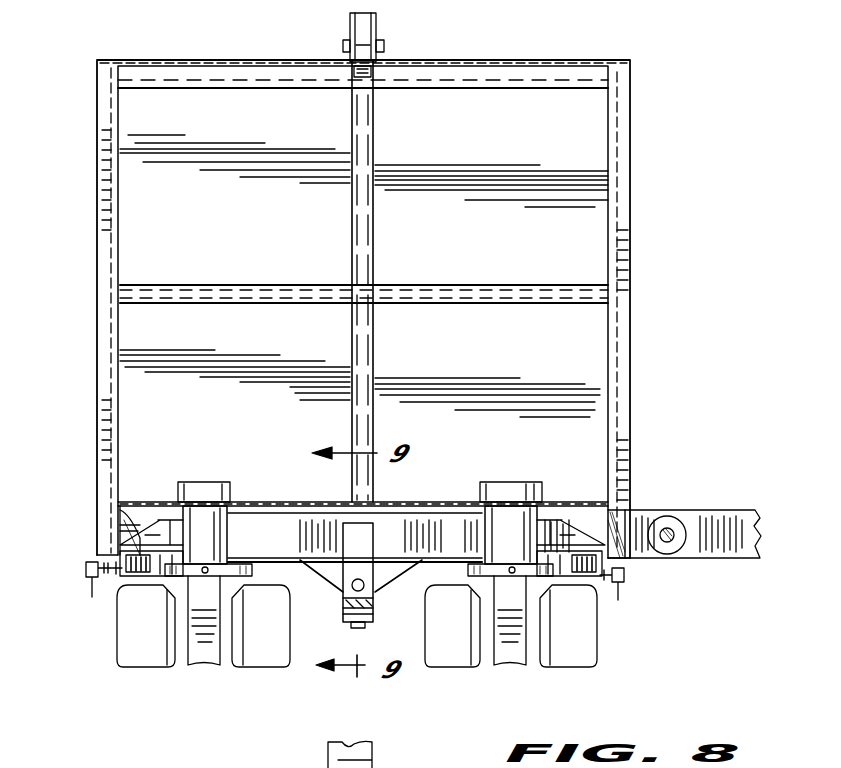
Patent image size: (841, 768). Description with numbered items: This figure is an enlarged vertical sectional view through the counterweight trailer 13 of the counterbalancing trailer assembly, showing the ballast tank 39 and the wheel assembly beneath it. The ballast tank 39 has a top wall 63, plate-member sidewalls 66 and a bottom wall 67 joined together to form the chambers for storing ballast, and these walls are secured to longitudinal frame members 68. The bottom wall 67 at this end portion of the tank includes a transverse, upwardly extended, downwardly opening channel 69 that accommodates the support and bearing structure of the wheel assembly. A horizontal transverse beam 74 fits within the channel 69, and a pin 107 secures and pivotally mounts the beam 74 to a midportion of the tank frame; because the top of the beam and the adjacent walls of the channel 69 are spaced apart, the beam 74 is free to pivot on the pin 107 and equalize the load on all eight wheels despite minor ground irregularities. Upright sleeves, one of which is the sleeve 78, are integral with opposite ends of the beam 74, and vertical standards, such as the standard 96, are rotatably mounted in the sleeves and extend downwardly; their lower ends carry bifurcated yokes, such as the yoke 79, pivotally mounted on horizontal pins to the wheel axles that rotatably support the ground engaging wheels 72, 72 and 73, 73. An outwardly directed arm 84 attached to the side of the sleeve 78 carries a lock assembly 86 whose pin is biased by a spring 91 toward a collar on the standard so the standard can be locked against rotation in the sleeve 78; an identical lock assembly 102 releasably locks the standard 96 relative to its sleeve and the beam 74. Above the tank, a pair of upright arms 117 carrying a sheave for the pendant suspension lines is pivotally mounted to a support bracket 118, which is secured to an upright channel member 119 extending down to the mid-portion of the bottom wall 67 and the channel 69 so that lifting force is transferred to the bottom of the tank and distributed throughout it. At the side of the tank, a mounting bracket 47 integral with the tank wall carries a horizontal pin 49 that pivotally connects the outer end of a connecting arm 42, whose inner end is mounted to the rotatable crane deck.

The counterweight trailer 13 is at (97, 470).
The ballast tank 39 is at (145, 120).
The connecting arm 42 is at (740, 516).
The mounting bracket 47 is at (668, 516).
The horizontal pin 49 is at (668, 542).
The top wall 63 is at (243, 62).
The sidewall 66 is at (97, 366).
The bottom wall 67 is at (322, 478).
The longitudinal frame member 68 is at (116, 540).
The channel 69 is at (124, 520).
The ground engaging wheel 72 is at (150, 650).
The ground engaging wheel 73 is at (455, 652).
The horizontal transverse beam 74 is at (246, 530).
The upright sleeve 78 is at (203, 512).
The bifurcated yoke 79 is at (200, 612).
The arm 84 is at (143, 536).
The lock assembly 86 is at (80, 578).
The spring 91 is at (510, 516).
The vertical standard 96 is at (512, 637).
The lock assembly 102 is at (630, 582).
The pin 107 is at (348, 592).
The upright arm 117 is at (348, 22).
The support bracket 118 is at (384, 36).
The upright channel member 119 is at (372, 243).